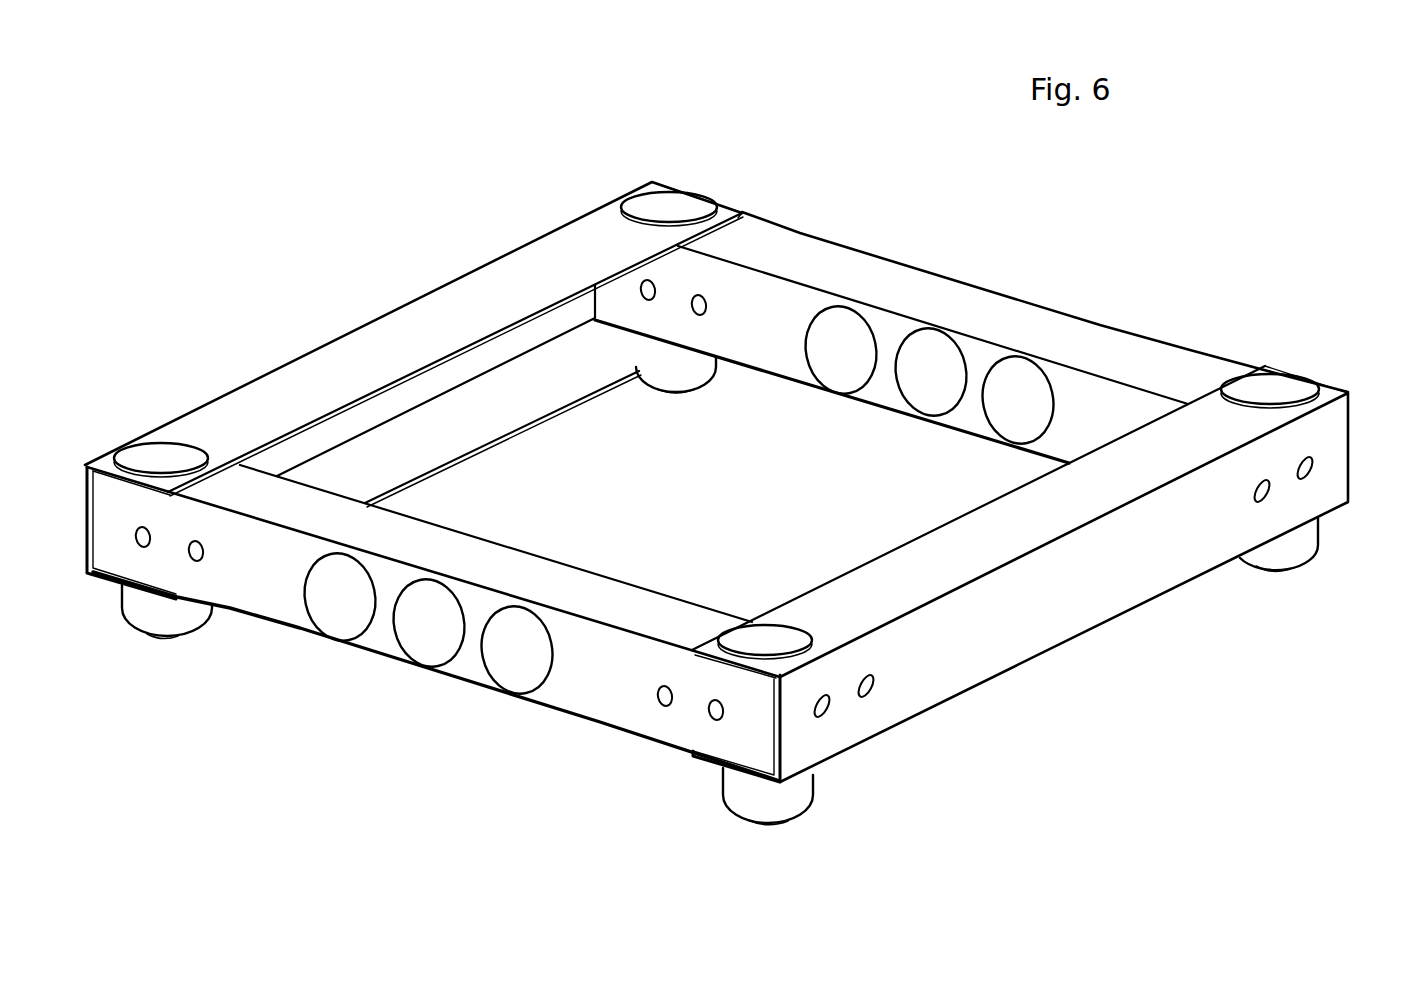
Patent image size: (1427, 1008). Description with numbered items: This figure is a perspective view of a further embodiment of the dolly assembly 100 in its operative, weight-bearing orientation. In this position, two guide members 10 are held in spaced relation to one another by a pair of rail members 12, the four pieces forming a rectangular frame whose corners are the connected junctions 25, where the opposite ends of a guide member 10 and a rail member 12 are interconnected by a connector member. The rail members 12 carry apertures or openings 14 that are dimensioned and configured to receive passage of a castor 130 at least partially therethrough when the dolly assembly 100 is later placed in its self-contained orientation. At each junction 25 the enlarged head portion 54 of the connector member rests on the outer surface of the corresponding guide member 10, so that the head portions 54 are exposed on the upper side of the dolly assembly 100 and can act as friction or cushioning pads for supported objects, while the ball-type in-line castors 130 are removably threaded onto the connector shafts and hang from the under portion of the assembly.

The dolly assembly 100 is at (190, 225).
The guide member 10 is at (423, 295).
The rail member 12 is at (618, 728).
The apertures or openings 14 is at (407, 648).
The connected junction 25 is at (107, 472).
The enlarged head portion 54 is at (137, 453).
The castor 130 is at (197, 627).